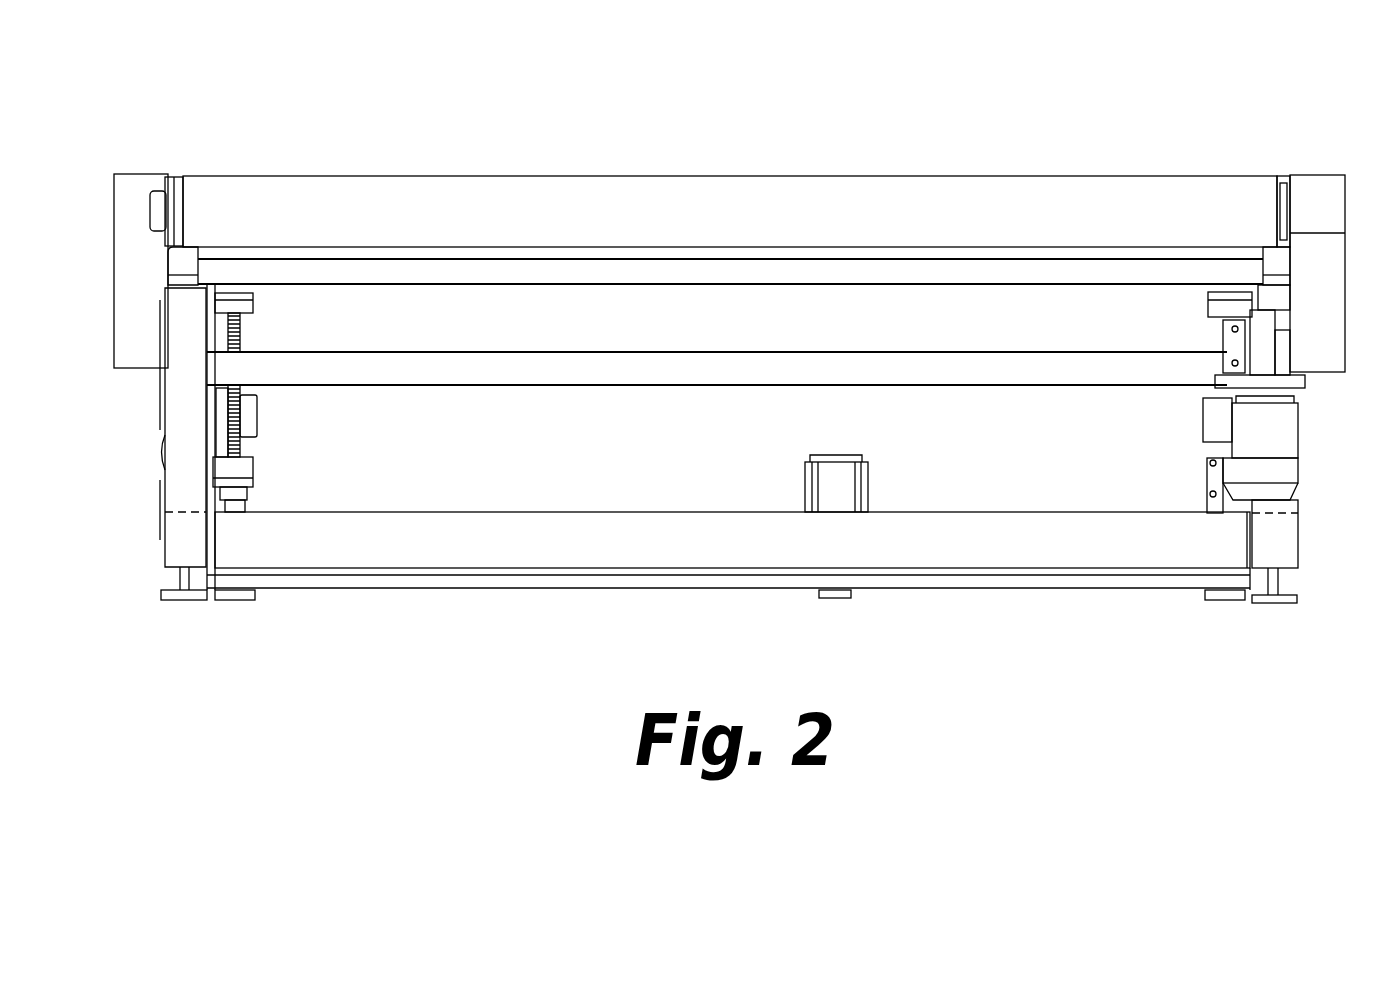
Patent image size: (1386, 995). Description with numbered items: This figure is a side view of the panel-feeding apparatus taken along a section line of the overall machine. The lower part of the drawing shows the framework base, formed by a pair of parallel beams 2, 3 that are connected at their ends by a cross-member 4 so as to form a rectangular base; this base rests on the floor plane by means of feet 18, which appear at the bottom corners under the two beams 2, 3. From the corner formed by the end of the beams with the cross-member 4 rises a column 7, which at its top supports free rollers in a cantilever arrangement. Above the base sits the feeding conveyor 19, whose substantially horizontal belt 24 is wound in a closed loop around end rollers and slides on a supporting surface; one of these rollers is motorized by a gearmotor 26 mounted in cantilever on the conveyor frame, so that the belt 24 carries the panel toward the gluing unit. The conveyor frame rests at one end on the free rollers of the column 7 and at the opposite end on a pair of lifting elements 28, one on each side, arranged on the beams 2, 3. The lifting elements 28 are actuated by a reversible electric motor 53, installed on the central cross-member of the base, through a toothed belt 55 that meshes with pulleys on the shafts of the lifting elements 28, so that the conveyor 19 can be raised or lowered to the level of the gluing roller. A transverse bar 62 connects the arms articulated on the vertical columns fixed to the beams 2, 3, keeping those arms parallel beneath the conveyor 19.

The beam 2 is at (178, 548).
The beam 3 is at (1283, 528).
The cross-member 4 is at (475, 548).
The column 7 is at (188, 442).
The foot 18 is at (175, 600).
The feeding conveyor 19 is at (996, 152).
The belt 24 is at (700, 193).
The gearmotor 26 is at (1280, 440).
The lifting element 28 is at (288, 431).
The electric motor 53 is at (855, 487).
The toothed belt 55 is at (960, 578).
The transverse bar 62 is at (590, 372).